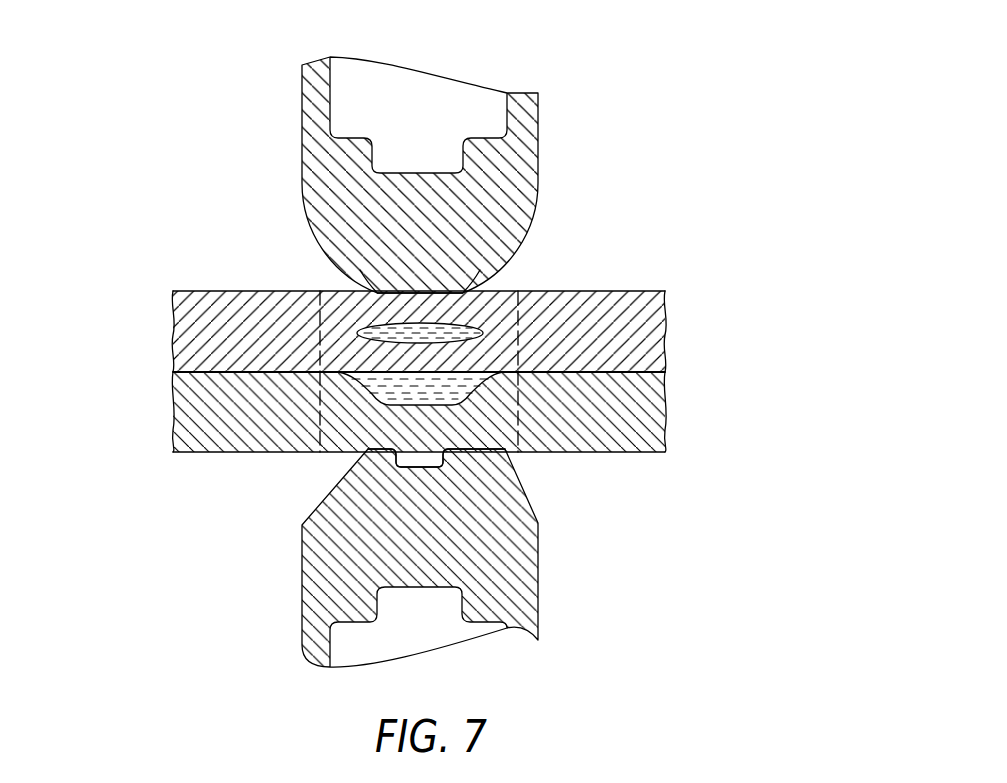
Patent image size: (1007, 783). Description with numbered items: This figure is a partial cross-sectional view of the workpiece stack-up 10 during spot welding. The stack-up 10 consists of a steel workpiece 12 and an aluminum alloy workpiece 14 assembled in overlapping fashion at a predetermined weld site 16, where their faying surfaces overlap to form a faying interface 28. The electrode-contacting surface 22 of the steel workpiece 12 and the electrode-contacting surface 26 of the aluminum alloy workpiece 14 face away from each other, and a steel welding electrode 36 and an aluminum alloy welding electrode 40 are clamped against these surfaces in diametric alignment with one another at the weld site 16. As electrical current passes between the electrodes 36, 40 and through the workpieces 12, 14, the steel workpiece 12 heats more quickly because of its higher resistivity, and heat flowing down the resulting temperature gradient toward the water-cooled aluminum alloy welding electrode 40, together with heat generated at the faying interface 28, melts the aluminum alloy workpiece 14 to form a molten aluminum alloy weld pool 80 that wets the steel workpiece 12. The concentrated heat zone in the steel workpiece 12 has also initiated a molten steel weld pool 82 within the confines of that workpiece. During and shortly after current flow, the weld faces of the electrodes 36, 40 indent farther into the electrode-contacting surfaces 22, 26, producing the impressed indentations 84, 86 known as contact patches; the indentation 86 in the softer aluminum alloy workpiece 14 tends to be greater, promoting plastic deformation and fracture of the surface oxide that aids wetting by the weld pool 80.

The workpiece stack-up 10 is at (407, 372).
The steel workpiece 12 is at (645, 335).
The aluminum alloy workpiece 14 is at (643, 413).
The weld site 16 is at (520, 329).
The electrode-contacting surface 22 is at (238, 290).
The electrode-contacting surface 26 is at (222, 453).
The faying interface 28 is at (218, 371).
The steel welding electrode 36 is at (546, 105).
The aluminum alloy welding electrode 40 is at (548, 565).
The molten aluminum alloy weld pool 80 is at (380, 397).
The molten steel weld pool 82 is at (472, 332).
The impressed indentation 84 is at (428, 296).
The impressed indentation 86 is at (372, 449).